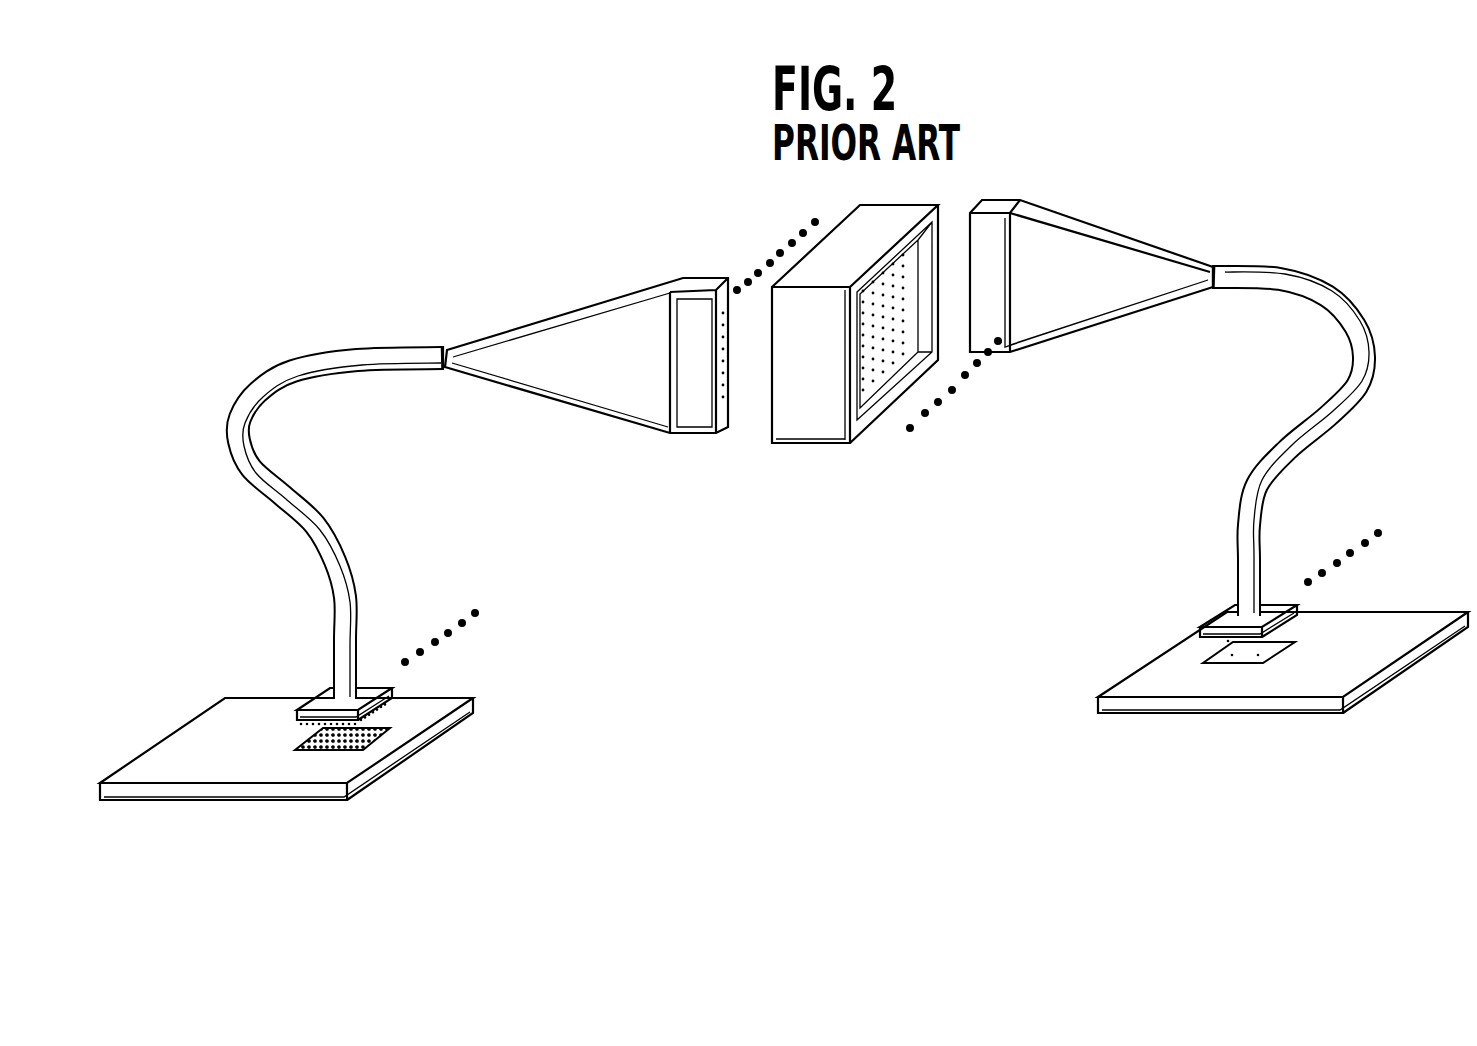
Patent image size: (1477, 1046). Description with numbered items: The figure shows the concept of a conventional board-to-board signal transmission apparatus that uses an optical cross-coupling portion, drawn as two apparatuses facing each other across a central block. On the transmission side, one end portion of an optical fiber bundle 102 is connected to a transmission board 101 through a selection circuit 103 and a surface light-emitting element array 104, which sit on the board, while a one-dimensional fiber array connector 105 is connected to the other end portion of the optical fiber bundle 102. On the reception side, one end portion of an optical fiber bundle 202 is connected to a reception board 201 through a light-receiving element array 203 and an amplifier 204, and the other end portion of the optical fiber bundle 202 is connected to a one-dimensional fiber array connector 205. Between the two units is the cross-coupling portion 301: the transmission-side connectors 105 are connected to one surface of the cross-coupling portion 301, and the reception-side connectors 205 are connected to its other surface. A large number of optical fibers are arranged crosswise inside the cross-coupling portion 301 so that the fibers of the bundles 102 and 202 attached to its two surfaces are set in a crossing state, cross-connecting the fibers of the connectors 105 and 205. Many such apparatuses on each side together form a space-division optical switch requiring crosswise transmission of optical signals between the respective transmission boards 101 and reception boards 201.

The transmission board 101 is at (205, 792).
The optical fiber bundle 102 is at (253, 487).
The selection circuit 103 is at (370, 743).
The surface light-emitting element array 104 is at (387, 697).
The one-dimensional fiber array connector 105 is at (590, 327).
The cross-coupling portion 301 is at (807, 425).
The one-dimensional fiber array connector 205 is at (1100, 260).
The optical fiber bundle 202 is at (1327, 417).
The light-receiving element array 203 is at (1222, 608).
The amplifier 204 is at (1203, 663).
The reception board 201 is at (1185, 705).